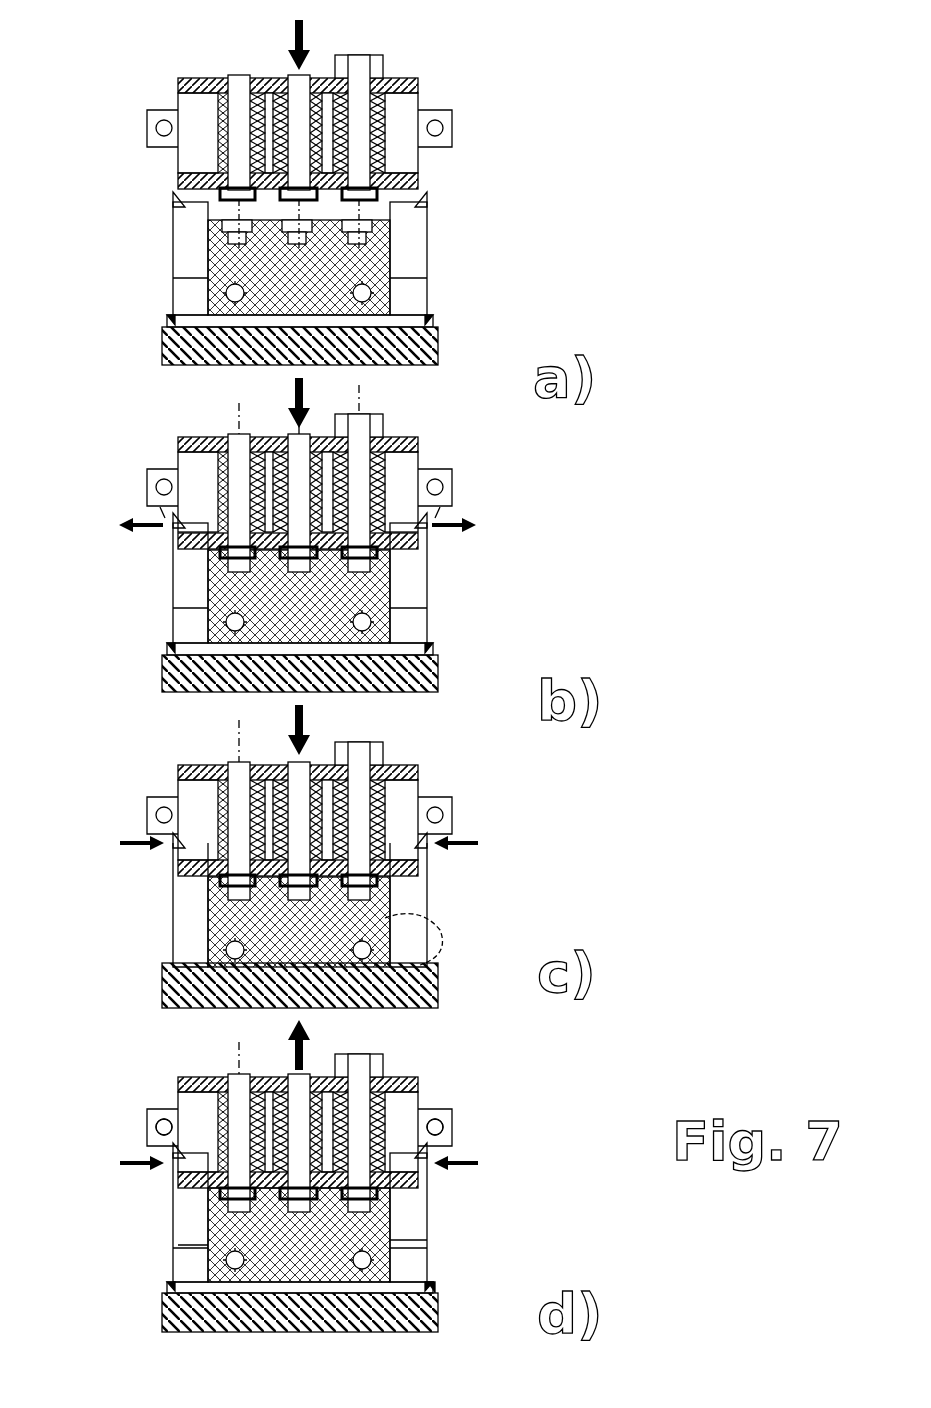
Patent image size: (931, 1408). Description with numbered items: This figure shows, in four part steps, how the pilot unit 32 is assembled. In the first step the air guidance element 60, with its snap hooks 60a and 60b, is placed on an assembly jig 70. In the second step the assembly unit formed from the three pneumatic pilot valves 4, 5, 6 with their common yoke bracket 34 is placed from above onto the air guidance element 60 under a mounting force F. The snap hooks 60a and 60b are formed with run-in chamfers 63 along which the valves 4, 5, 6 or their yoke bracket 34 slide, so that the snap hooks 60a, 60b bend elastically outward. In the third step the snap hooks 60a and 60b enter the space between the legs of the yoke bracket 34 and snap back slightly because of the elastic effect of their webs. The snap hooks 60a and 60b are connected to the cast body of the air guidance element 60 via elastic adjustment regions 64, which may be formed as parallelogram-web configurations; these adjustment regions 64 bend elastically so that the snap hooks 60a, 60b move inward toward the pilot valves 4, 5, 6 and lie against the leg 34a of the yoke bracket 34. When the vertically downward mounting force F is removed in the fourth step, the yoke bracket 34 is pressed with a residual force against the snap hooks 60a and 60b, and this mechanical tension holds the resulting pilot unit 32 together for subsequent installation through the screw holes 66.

The pilot valve 4 is at (298, 82).
The pilot valve 5 is at (238, 80).
The pilot valve 6 is at (360, 70).
The pilot unit 32 is at (435, 1290).
The yoke bracket 34 is at (418, 98).
The leg 34a is at (178, 178).
The air guidance element 60 is at (210, 250).
The snap hook 60a is at (178, 195).
The snap hook 60b is at (427, 195).
The run-in chamfer 63 is at (165, 520).
The adjustment region 64 is at (195, 640).
The screw hole 66 is at (160, 1123).
The assembly jig 70 is at (162, 345).
The mounting force F is at (290, 718).